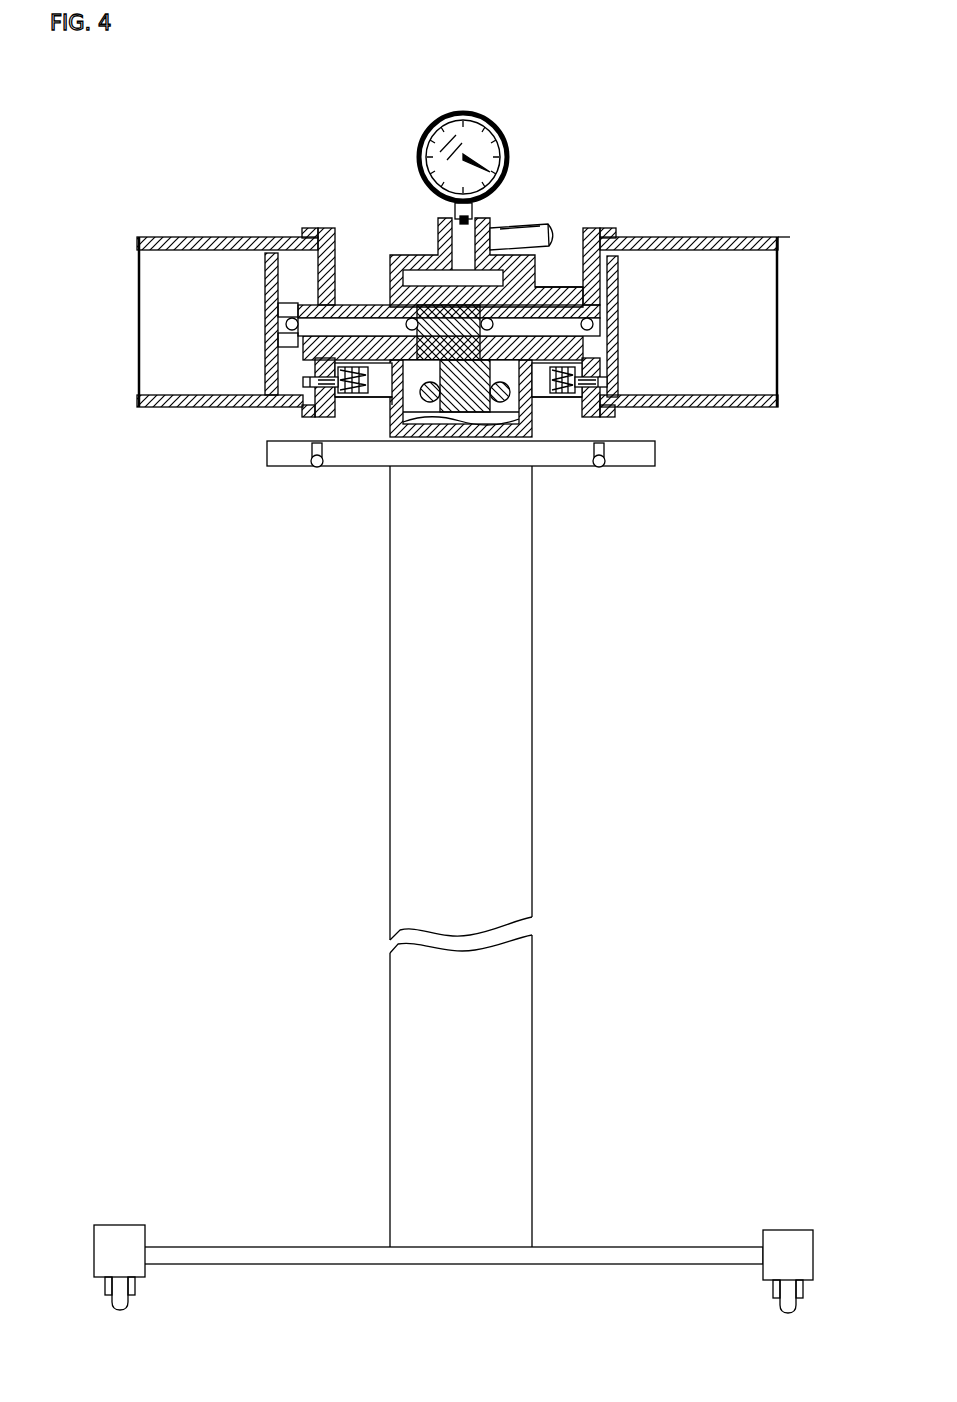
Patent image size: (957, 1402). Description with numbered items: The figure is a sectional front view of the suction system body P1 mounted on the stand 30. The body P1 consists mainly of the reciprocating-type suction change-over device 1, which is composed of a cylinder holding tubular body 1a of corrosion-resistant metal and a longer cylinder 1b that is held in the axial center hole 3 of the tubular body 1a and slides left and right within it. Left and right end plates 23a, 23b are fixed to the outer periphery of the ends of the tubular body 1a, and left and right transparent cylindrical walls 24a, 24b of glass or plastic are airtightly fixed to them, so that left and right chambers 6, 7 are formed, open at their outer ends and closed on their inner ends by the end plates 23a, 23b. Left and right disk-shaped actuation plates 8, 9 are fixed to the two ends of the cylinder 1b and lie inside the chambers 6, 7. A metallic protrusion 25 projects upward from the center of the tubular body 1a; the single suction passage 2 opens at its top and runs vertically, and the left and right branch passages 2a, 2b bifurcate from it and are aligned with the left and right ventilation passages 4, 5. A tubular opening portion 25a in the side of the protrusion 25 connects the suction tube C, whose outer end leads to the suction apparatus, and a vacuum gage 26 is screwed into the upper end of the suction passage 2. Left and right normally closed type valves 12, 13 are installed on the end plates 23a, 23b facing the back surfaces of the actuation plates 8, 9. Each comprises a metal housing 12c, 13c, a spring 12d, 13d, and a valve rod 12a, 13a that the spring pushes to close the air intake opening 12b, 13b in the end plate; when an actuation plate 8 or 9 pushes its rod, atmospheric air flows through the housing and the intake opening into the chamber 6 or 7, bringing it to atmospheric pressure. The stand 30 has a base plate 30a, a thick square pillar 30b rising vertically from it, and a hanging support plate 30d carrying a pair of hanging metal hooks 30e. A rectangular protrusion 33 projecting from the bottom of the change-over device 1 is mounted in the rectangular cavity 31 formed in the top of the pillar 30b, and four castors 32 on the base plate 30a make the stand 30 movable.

The reciprocating-type suction change-over device 1 is at (393, 172).
The cylinder holding tubular body 1a is at (461, 485).
The cylinder 1b is at (330, 303).
The single suction passage 2 is at (466, 246).
The left branch passage 2a is at (408, 283).
The right branch passage 2b is at (508, 275).
The axial center hole 3 is at (508, 400).
The left ventilation passage 4 is at (432, 415).
The right ventilation passage 5 is at (490, 400).
The left chamber 6 is at (212, 276).
The right chamber 7 is at (714, 290).
The left actuation plate 8 is at (270, 273).
The right actuation plate 9 is at (618, 258).
The left normally closed type valve 12 is at (271, 450).
The left valve rod 12a is at (312, 382).
The left air intake opening 12b is at (337, 415).
The left valve housing 12c is at (372, 405).
The left spring 12d is at (353, 395).
The right normally closed type valve 13 is at (630, 447).
The right valve rod 13a is at (600, 383).
The right air intake opening 13b is at (602, 368).
The right valve housing 13c is at (540, 400).
The right spring 13d is at (557, 400).
The left end plate 23a is at (327, 228).
The right end plate 23b is at (592, 230).
The left transparent cylindrical wall 24a is at (185, 237).
The right transparent cylindrical wall 24b is at (715, 237).
The protrusion 25 is at (531, 163).
The tubular opening portion 25a is at (503, 225).
The vacuum gage 26 is at (466, 112).
The stand 30 is at (475, 856).
The base plate 30a is at (645, 1255).
The square pillar 30b is at (412, 1030).
The hanging support plate 30d is at (280, 458).
The hanging metal hook 30e is at (308, 457).
The rectangular cavity 31 is at (475, 400).
The castor 32 is at (122, 1302).
The rectangular protrusion 33 is at (452, 400).
The suction tube C is at (514, 232).
The suction system body P1 is at (793, 250).